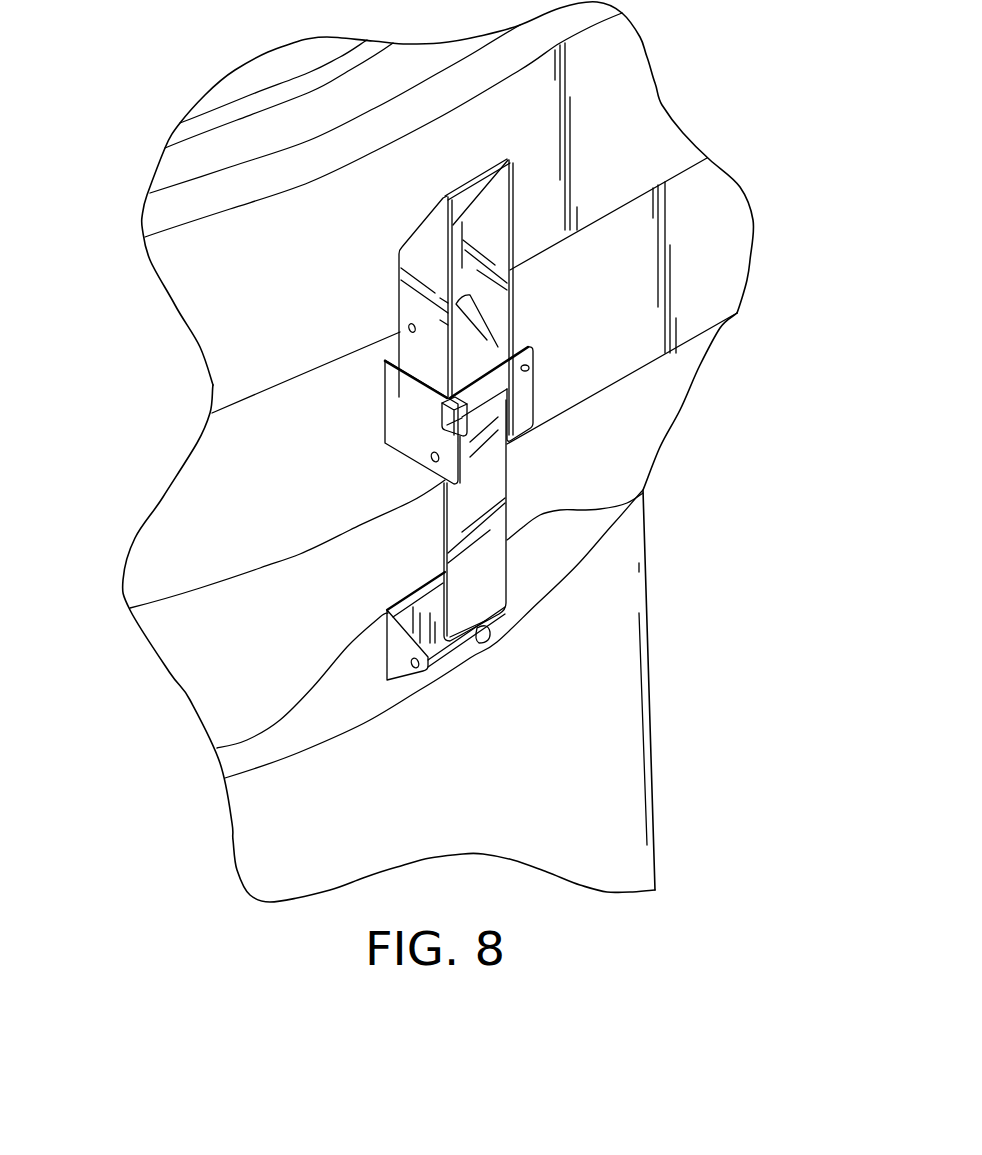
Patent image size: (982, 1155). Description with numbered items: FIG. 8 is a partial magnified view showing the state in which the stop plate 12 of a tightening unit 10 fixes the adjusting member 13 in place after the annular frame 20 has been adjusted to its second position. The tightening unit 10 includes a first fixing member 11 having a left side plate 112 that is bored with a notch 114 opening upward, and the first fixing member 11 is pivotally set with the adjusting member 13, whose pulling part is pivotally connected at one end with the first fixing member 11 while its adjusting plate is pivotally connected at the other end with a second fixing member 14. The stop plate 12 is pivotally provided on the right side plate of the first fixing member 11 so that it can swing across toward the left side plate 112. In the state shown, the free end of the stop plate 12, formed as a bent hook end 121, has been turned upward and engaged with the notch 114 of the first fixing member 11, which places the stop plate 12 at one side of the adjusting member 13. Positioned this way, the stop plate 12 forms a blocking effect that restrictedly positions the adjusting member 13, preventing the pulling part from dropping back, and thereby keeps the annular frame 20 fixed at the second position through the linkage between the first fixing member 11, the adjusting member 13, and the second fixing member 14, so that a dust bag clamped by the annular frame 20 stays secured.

The tightening unit 10 is at (507, 465).
The first fixing member 11 is at (385, 356).
The left side plate 112 is at (412, 417).
The notch 114 is at (440, 394).
The stop plate 12 is at (525, 368).
The bent hook end 121 is at (442, 425).
The adjusting member 13 is at (498, 222).
The second fixing member 14 is at (388, 613).
The annular frame 20 is at (222, 767).